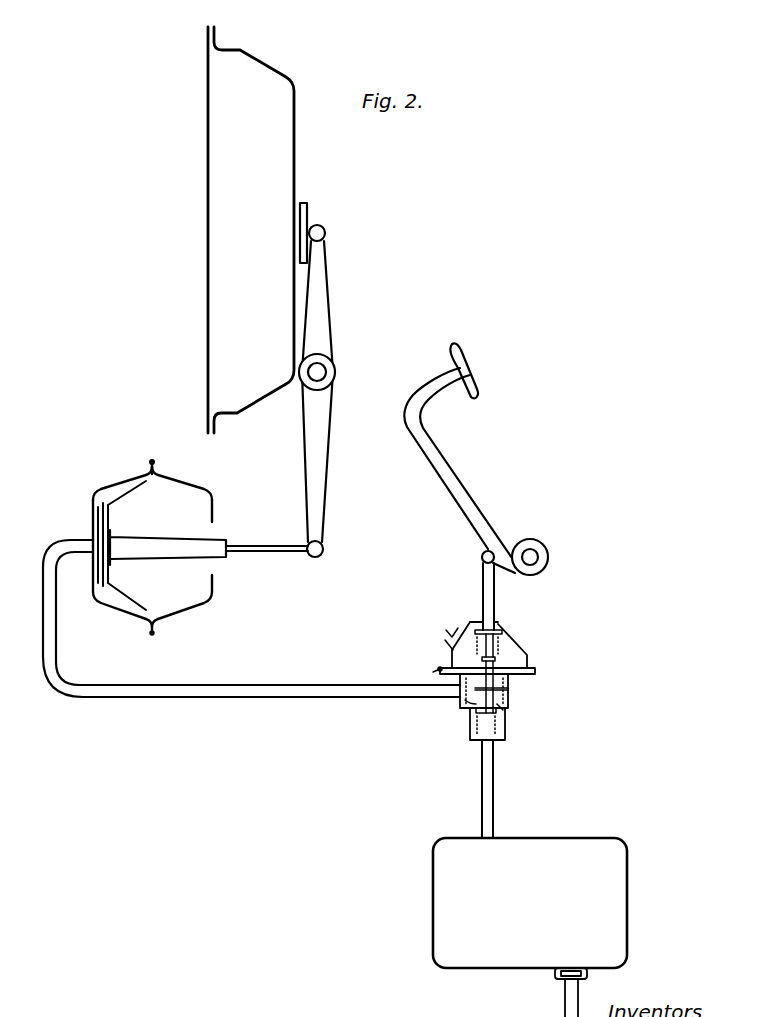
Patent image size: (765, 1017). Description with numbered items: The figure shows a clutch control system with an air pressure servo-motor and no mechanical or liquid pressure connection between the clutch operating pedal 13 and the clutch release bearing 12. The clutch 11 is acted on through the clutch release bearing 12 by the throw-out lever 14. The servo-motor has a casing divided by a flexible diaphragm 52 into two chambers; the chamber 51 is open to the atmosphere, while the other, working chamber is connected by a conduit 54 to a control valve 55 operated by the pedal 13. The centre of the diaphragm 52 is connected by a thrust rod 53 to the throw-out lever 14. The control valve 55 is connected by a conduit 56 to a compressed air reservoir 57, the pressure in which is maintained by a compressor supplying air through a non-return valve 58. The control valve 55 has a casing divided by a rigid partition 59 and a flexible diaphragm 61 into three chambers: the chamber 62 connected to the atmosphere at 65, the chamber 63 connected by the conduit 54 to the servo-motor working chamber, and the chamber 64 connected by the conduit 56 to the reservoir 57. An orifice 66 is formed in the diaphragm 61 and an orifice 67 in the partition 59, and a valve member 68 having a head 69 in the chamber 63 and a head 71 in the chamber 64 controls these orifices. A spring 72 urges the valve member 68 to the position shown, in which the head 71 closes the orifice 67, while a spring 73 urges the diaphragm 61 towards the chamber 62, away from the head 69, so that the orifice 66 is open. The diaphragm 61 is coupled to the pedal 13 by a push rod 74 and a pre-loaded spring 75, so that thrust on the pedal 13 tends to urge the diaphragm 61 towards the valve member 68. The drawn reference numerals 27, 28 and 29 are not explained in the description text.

The clutch 11 is at (251, 230).
The clutch release bearing 12 is at (321, 224).
The clutch operating pedal 13 is at (453, 459).
The throw-out lever 14 is at (335, 391).
The vent 27 is at (135, 461).
The master cylinder housing 28 is at (205, 606).
The boot 29 is at (100, 496).
The chamber 51 is at (168, 562).
The flexible diaphragm 52 is at (140, 492).
The thrust rod 53 is at (260, 546).
The conduit 54 is at (168, 697).
The control valve 55 is at (528, 632).
The conduit 56 is at (494, 793).
The compressed air reservoir 57 is at (530, 903).
The non-return valve 58 is at (556, 978).
The rigid partition 59 is at (471, 717).
The flexible diaphragm 61 is at (527, 654).
The chamber 62 is at (452, 650).
The chamber 63 is at (461, 692).
The chamber 64 is at (476, 738).
The atmosphere connection 65 is at (452, 633).
The orifice 66 is at (509, 688).
The orifice 67 is at (462, 700).
The valve member 68 is at (505, 712).
The head 69 is at (509, 693).
The head 71 is at (504, 737).
The spring 72 is at (480, 743).
The spring 73 is at (441, 667).
The push rod 74 is at (482, 584).
The pre-loaded spring 75 is at (496, 643).